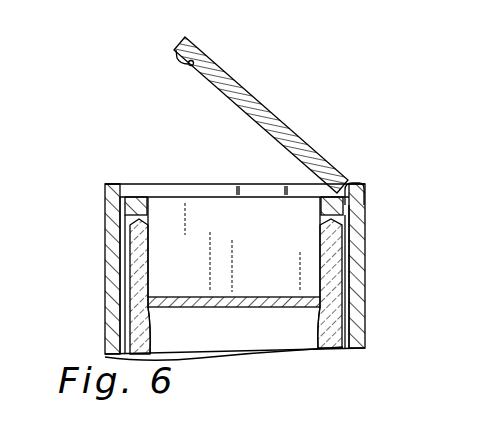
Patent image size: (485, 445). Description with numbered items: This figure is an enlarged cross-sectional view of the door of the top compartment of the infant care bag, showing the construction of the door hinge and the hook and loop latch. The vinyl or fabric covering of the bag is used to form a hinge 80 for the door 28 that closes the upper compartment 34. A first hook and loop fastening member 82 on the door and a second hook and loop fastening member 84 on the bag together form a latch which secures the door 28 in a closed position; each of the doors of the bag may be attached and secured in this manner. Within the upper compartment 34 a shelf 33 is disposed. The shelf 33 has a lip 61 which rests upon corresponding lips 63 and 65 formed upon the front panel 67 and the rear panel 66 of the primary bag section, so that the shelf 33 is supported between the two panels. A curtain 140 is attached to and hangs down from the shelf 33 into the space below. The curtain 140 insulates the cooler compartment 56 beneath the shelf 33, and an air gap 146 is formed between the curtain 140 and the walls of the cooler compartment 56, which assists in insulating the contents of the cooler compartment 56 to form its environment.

The door 28 is at (248, 79).
The first hook and loop fastening member 82 is at (180, 58).
The hinge 80 is at (353, 182).
The shelf 33 is at (245, 188).
The upper compartment 34 is at (213, 210).
The lip 61 is at (123, 207).
The lip 63 is at (141, 223).
The lip 65 is at (326, 222).
The rear panel 66 is at (366, 272).
The front panel 67 is at (106, 282).
The second hook and loop fastening member 84 is at (127, 202).
The air gap 146 is at (347, 300).
The curtain 140 is at (150, 338).
The cooler compartment 56 is at (262, 350).